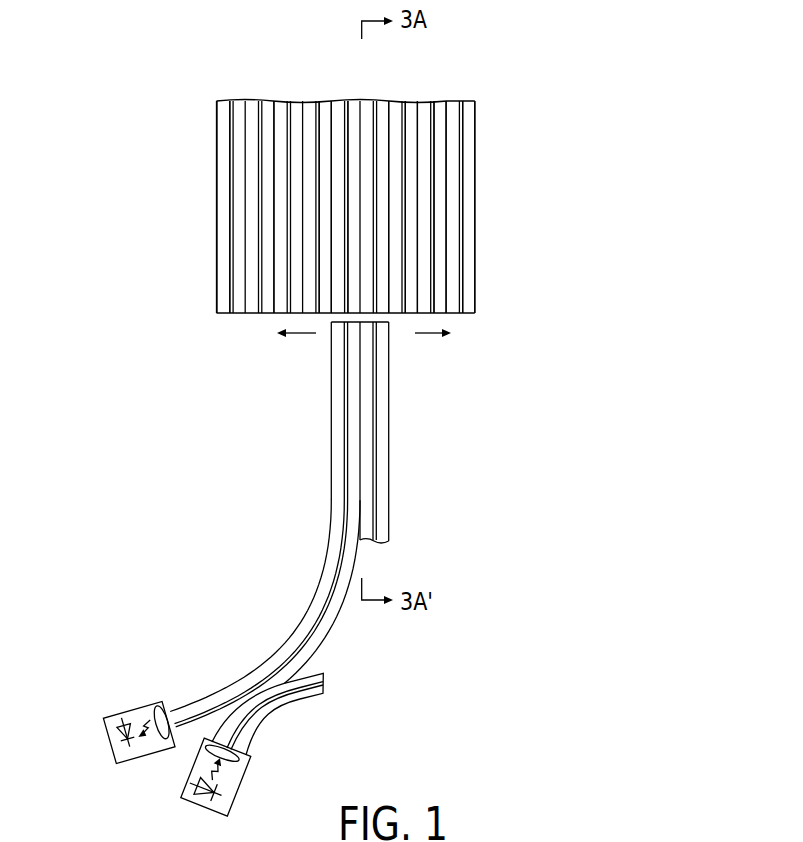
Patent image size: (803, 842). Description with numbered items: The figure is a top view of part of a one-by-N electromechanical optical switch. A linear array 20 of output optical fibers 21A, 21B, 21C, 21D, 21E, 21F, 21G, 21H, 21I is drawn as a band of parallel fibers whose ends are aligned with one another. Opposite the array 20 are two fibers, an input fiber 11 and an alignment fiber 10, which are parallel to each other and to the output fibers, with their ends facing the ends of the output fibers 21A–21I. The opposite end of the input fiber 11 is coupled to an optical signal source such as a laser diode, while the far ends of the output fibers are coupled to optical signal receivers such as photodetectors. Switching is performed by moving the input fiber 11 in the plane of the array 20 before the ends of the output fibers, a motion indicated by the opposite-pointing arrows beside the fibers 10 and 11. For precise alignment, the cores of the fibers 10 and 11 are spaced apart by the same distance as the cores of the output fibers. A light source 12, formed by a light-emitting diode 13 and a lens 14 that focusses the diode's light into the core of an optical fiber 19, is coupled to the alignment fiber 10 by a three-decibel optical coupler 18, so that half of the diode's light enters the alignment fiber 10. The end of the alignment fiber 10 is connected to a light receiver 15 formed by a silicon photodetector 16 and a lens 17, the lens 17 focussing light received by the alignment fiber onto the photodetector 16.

The alignment fiber 10 is at (344, 408).
The input fiber 11 is at (386, 415).
The light source 12 is at (224, 769).
The light-emitting diode 13 is at (205, 803).
The lens 14 is at (242, 751).
The light receiver 15 is at (131, 711).
The silicon photodetector 16 is at (106, 737).
The lens 17 is at (166, 708).
The optical coupler 18 is at (240, 657).
The optical fiber 19 is at (290, 702).
The linear array 20 is at (173, 286).
The output optical fiber 21A is at (222, 311).
The output optical fiber 21B is at (268, 106).
The output optical fiber 21C is at (282, 307).
The output optical fiber 21D is at (324, 106).
The output optical fiber 21E is at (354, 107).
The output optical fiber 21F is at (382, 105).
The output optical fiber 21G is at (412, 311).
The output optical fiber 21H is at (440, 107).
The output optical fiber 21I is at (468, 298).